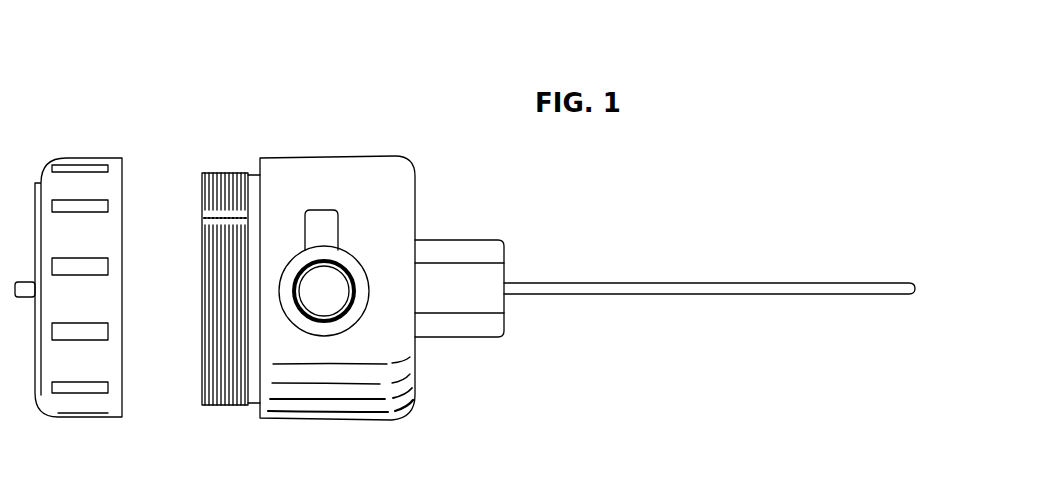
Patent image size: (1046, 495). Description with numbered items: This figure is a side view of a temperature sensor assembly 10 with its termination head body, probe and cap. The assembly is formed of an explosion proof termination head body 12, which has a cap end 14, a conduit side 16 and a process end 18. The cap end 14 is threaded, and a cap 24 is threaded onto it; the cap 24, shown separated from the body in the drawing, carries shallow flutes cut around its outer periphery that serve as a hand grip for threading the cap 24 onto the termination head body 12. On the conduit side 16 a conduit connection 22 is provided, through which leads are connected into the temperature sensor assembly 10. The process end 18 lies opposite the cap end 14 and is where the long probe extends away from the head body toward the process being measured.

The temperature sensor assembly 10 is at (287, 128).
The termination head body 12 is at (420, 400).
The cap end 14 is at (172, 178).
The conduit side 16 is at (354, 168).
The process end 18 is at (503, 240).
The conduit connection 22 is at (322, 316).
The cap 24 is at (122, 418).